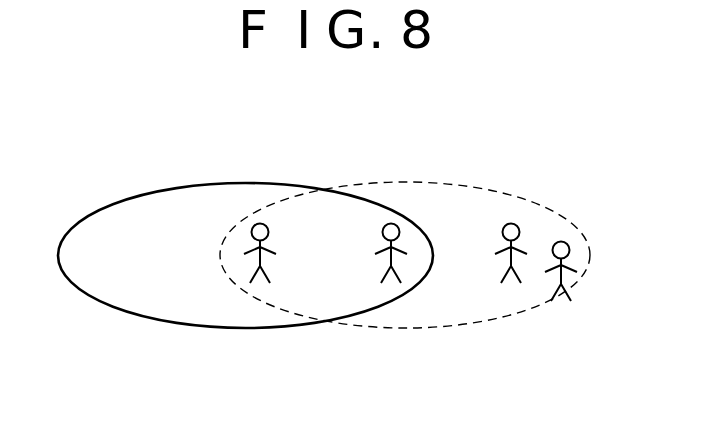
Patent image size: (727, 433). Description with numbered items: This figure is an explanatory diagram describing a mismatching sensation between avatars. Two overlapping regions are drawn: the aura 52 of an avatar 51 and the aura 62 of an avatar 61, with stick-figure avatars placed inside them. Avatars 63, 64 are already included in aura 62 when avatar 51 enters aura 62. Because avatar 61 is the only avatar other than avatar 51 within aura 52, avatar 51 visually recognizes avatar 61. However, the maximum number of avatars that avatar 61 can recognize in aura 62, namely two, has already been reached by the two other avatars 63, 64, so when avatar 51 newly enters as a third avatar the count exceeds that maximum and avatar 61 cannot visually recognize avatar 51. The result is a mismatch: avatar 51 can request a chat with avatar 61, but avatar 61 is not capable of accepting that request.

The avatar 51 is at (260, 223).
The aura 52 is at (202, 329).
The avatar 61 is at (391, 223).
The aura 62 is at (430, 328).
The avatar 63 is at (511, 223).
The avatar 64 is at (567, 244).